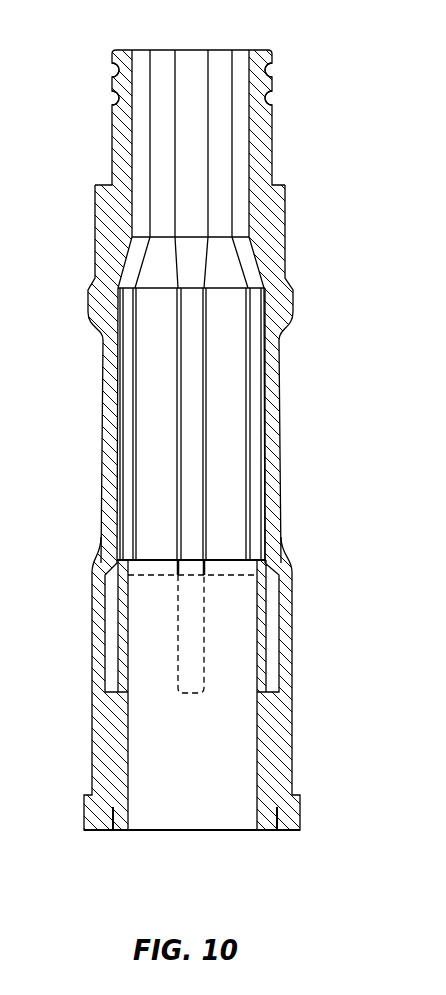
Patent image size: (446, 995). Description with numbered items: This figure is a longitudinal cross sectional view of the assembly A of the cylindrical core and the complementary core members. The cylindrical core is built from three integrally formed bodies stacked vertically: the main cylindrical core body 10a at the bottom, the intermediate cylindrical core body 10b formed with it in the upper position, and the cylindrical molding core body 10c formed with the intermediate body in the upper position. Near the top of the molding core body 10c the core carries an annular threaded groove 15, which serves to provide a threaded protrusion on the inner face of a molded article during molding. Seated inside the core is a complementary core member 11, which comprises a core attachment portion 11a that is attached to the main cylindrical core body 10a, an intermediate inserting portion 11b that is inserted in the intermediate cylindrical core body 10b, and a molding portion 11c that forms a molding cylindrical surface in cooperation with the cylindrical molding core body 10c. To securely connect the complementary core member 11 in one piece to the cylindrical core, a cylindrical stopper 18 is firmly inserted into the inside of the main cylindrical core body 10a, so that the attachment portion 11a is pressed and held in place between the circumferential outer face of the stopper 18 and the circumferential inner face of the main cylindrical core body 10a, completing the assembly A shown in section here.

The assembly A is at (190, 451).
The main cylindrical core body 10a is at (85, 572).
The intermediate cylindrical core body 10b is at (85, 188).
The cylindrical molding core body 10c is at (105, 53).
The complementary core member 11 is at (238, 351).
The core attachment portion 11a is at (192, 653).
The intermediate inserting portion 11b is at (193, 507).
The molding portion 11c is at (190, 58).
The annular threaded groove 15 is at (111, 62).
The cylindrical stopper 18 is at (130, 787).